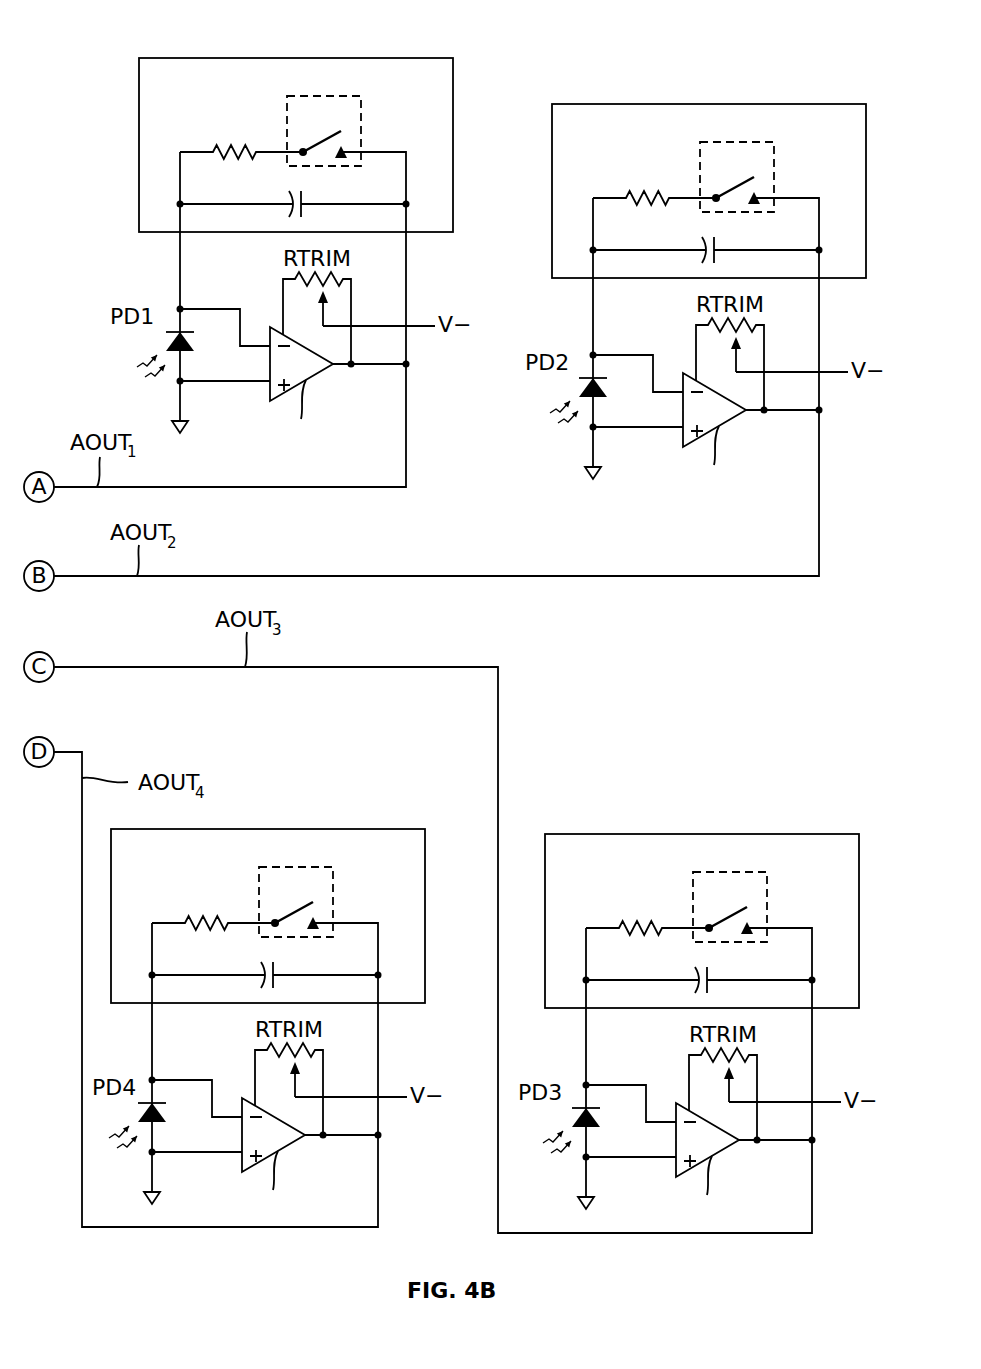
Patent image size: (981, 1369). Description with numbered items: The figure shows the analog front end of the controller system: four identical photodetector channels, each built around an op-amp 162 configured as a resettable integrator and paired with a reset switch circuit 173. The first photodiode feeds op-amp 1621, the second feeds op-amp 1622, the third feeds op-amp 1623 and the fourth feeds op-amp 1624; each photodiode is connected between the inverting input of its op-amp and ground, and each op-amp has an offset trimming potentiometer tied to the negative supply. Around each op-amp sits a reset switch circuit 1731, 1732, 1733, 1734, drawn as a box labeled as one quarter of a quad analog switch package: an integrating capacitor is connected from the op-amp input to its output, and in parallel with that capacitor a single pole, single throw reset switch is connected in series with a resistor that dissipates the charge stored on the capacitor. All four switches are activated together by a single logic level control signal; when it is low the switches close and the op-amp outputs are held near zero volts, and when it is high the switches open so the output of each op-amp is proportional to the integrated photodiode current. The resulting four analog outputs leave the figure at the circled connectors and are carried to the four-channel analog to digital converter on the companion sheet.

The reset switch circuit 173 is at (455, 533).
The op-amp 162 is at (515, 774).
The reset switch circuit 1731 is at (249, 145).
The reset switch circuit 1732 is at (665, 193).
The reset switch circuit 1733 is at (702, 888).
The reset switch circuit 1734 is at (268, 884).
The op-amp 1621 is at (323, 386).
The op-amp 1622 is at (736, 432).
The op-amp 1623 is at (729, 1162).
The op-amp 1624 is at (295, 1157).